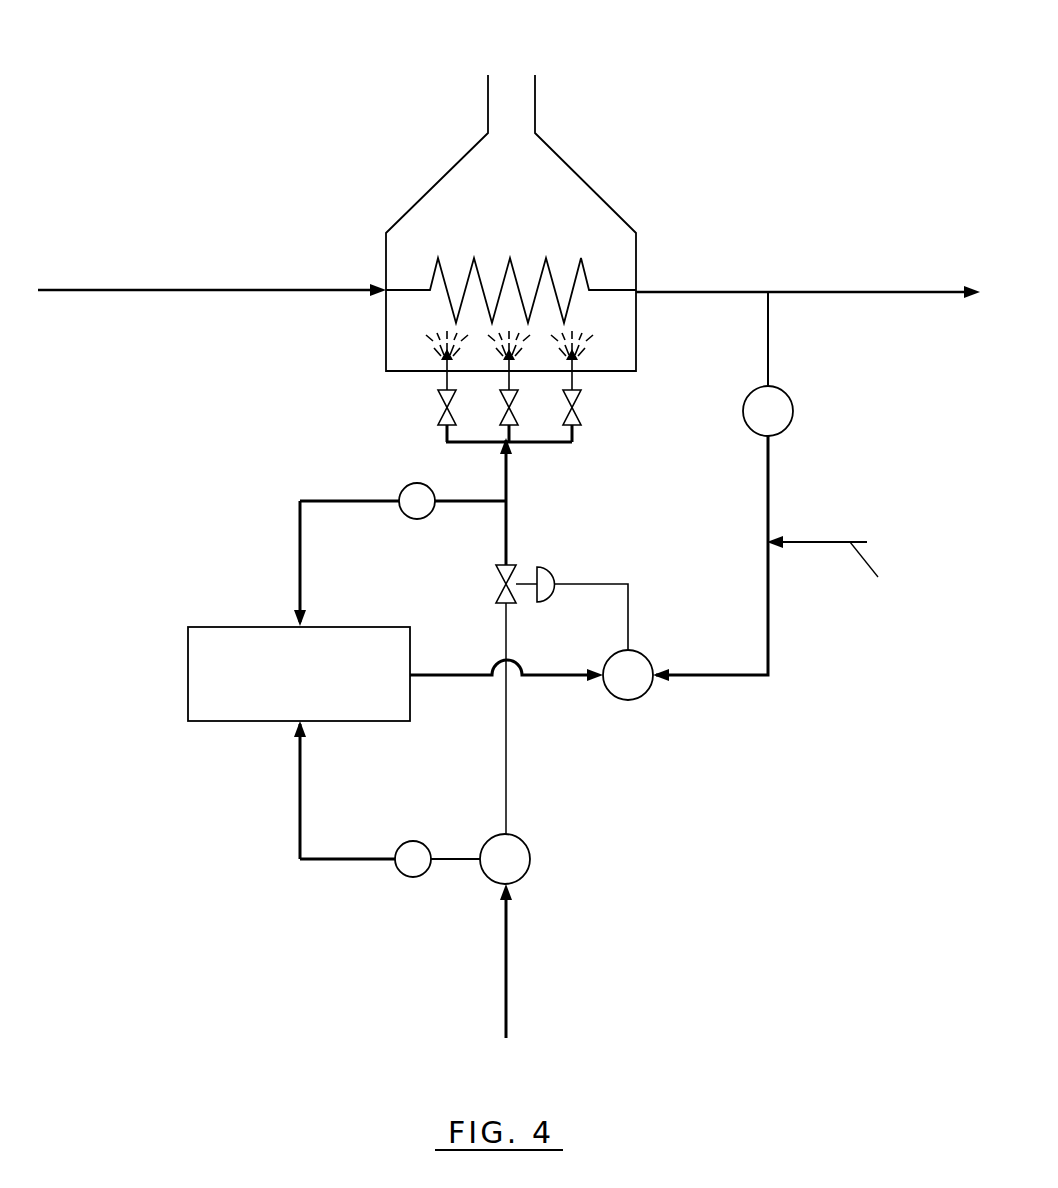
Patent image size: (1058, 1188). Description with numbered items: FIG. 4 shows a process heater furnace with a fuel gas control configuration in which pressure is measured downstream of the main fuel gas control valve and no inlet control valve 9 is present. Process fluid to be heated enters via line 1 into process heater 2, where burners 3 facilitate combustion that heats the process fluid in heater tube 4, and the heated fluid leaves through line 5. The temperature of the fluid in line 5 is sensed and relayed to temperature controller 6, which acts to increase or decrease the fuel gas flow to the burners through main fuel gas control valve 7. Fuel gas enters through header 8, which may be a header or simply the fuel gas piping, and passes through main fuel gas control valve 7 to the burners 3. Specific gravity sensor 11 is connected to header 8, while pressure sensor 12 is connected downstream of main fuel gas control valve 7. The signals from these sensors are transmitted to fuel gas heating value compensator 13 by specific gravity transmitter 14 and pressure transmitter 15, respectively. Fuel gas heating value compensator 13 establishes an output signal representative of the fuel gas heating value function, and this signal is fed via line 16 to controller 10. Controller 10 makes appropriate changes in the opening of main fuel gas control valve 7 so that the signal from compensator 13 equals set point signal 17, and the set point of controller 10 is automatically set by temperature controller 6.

The line 1 is at (185, 290).
The process heater 2 is at (578, 178).
The burners 3 is at (503, 352).
The heater tube 4 is at (510, 260).
The line 5 is at (843, 292).
The temperature controller 6 is at (748, 427).
The main fuel gas control valve 7 is at (503, 583).
The header 8 is at (525, 877).
The inlet control valve 9 is at (500, 952).
The controller 10 is at (648, 655).
The specific gravity sensor 11 is at (457, 857).
The pressure sensor 12 is at (472, 502).
The fuel gas heating value compensator 13 is at (230, 625).
The specific gravity transmitter 14 is at (403, 845).
The pressure transmitter 15 is at (405, 523).
The line 16 is at (455, 677).
The set point signal 17 is at (830, 542).